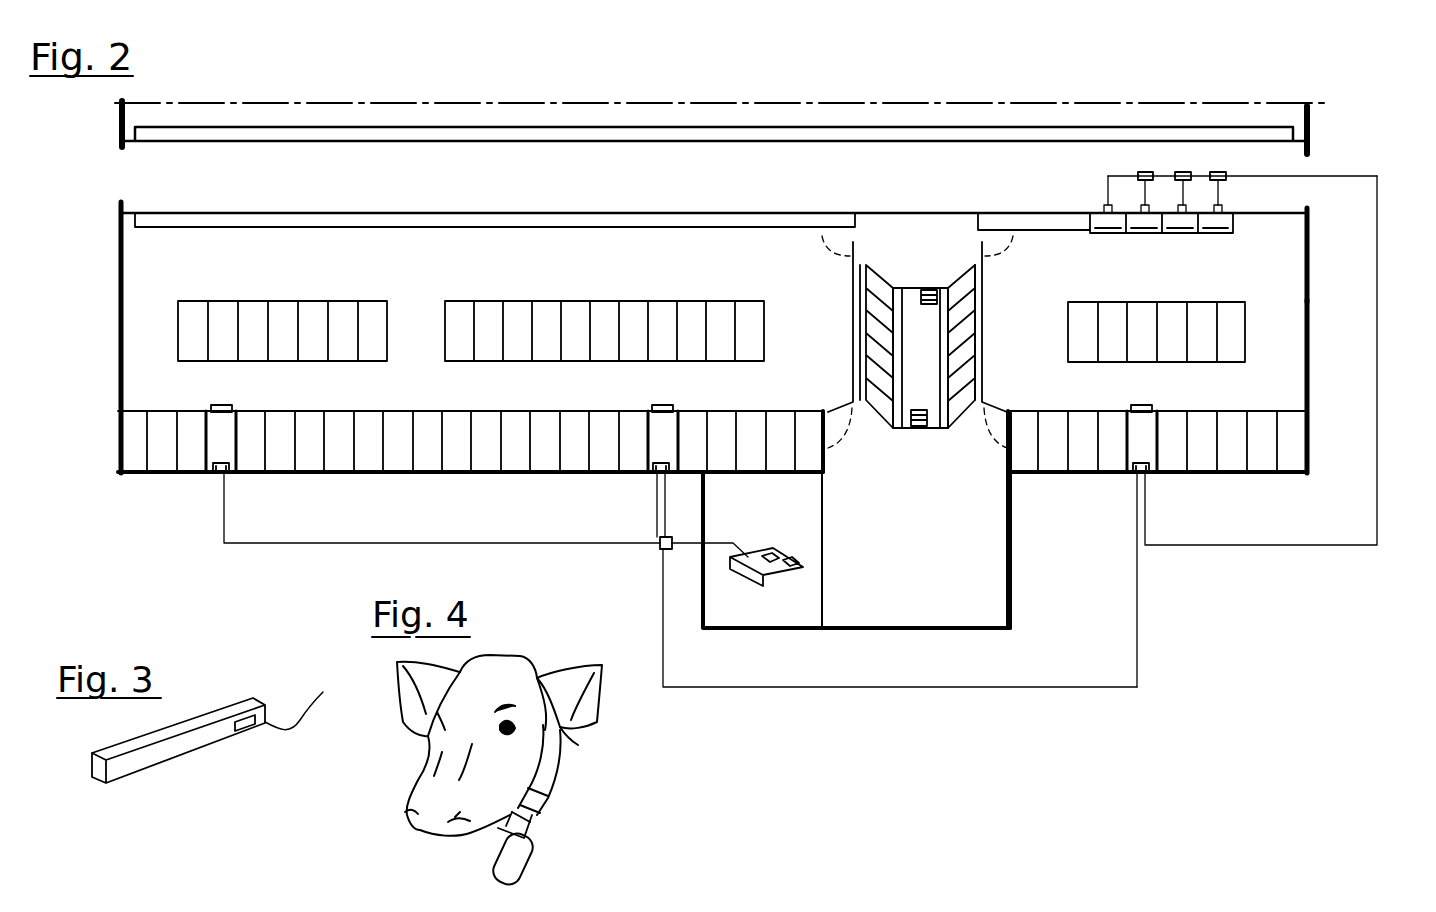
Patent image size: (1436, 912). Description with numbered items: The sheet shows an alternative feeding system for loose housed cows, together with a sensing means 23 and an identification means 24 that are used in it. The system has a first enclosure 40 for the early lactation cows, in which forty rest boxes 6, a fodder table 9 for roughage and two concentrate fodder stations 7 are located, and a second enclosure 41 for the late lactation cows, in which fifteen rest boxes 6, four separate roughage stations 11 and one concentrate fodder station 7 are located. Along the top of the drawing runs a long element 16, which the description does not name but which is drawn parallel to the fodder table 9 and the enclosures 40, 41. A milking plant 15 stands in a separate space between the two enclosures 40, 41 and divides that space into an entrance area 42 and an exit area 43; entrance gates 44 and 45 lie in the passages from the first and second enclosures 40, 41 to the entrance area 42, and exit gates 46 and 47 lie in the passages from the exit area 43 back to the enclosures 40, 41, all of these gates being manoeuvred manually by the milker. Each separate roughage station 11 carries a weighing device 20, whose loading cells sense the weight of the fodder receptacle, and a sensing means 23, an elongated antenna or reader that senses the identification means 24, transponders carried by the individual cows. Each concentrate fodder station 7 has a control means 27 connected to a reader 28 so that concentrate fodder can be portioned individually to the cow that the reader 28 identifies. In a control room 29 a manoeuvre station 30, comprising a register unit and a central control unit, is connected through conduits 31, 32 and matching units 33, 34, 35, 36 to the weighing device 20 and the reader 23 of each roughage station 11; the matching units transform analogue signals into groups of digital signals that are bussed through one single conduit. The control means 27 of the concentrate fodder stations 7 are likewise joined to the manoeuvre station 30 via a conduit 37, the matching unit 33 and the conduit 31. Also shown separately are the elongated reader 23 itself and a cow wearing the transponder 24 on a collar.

In FIG. 2, the rest box 6 is at (510, 305).
In FIG. 2, the concentrate fodder station 7 is at (227, 437).
In FIG. 2, the fodder table 9 is at (568, 213).
In FIG. 2, the separate roughage station 11 is at (1090, 222).
In FIG. 2, the milking plant 15 is at (912, 300).
In FIG. 2, the feed rail 16 is at (423, 172).
In FIG. 2, the weighing device 20 is at (1220, 207).
In FIG. 2, the sensing means 23 is at (1115, 233).
In FIG. 3, the sensing means 23 is at (140, 763).
In FIG. 4, the identification means 24 is at (535, 872).
In FIG. 2, the control means 27 is at (215, 473).
In FIG. 2, the reader 28 is at (213, 406).
In FIG. 2, the control room 29 is at (781, 530).
In FIG. 2, the manoeuvre station 30 is at (745, 573).
In FIG. 2, the conduit 31 is at (693, 545).
In FIG. 2, the conduit 32 is at (1375, 435).
In FIG. 2, the matching unit 33 is at (662, 548).
In FIG. 2, the matching unit 34 is at (1218, 172).
In FIG. 2, the matching unit 35 is at (1183, 172).
In FIG. 2, the matching unit 36 is at (1145, 172).
In FIG. 2, the conduit 37 is at (470, 543).
In FIG. 2, the first enclosure 40 is at (118, 283).
In FIG. 2, the second enclosure 41 is at (1308, 300).
In FIG. 2, the entrance area 42 is at (928, 563).
In FIG. 2, the exit area 43 is at (908, 260).
In FIG. 2, the entrance gate 44 is at (840, 402).
In FIG. 2, the entrance gate 45 is at (993, 405).
In FIG. 2, the exit gate 46 is at (848, 255).
In FIG. 2, the exit gate 47 is at (987, 247).